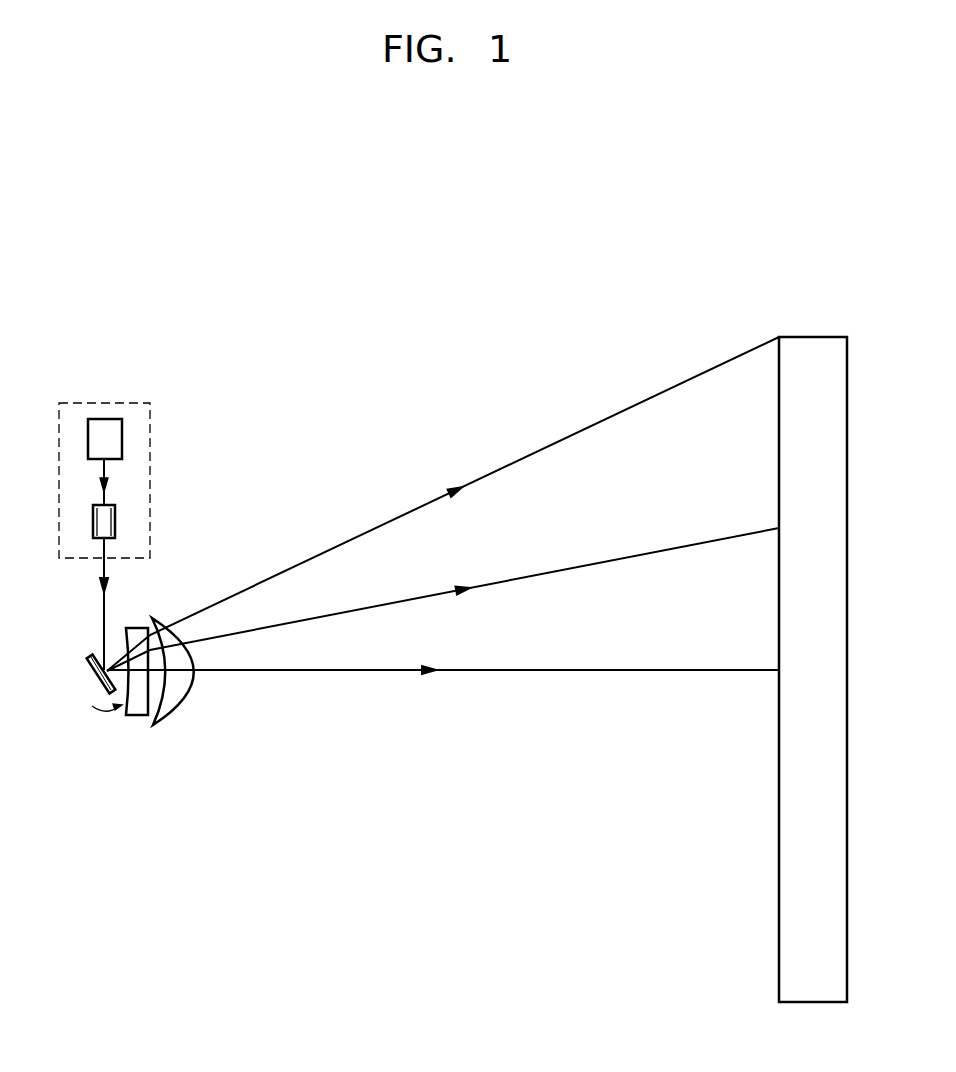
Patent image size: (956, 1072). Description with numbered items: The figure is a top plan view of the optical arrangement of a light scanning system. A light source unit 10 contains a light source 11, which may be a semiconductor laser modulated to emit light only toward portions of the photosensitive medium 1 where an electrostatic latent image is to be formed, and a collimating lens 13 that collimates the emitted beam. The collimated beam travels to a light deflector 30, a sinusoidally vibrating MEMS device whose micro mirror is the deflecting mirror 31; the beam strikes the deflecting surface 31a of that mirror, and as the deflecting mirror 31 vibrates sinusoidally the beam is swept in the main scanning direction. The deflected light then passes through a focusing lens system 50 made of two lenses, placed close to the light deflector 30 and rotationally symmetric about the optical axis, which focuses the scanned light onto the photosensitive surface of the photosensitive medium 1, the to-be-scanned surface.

The photosensitive medium 1 is at (812, 337).
The light source unit 10 is at (110, 403).
The light source 11 is at (122, 440).
The collimating lens 13 is at (115, 522).
The light deflector 30 is at (68, 660).
The deflecting mirror 31 is at (92, 679).
The deflecting surface 31a is at (100, 655).
The focusing lens system 50 is at (195, 742).